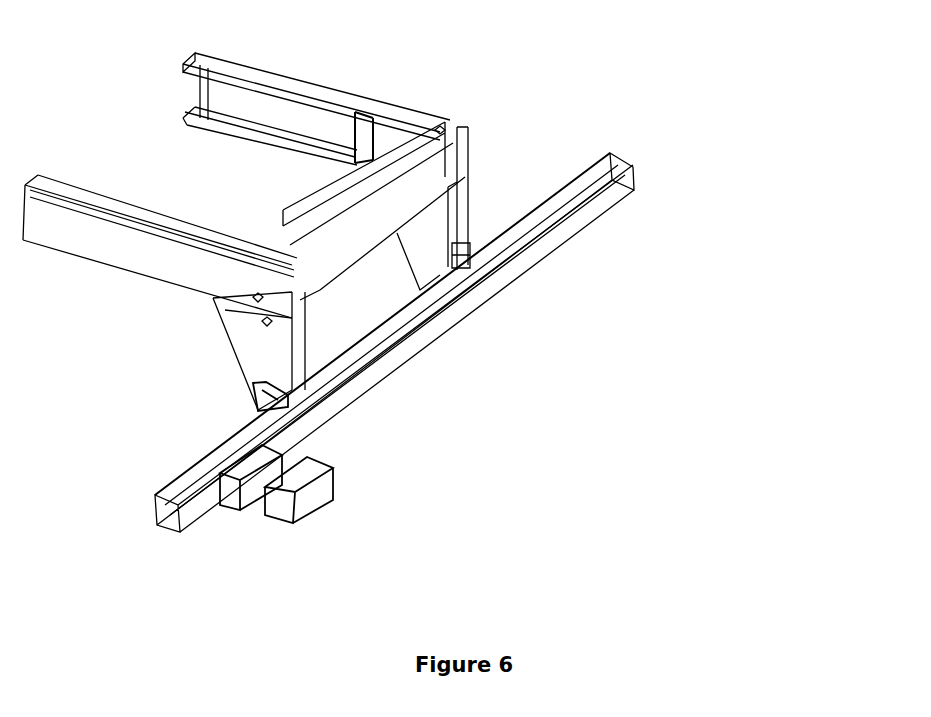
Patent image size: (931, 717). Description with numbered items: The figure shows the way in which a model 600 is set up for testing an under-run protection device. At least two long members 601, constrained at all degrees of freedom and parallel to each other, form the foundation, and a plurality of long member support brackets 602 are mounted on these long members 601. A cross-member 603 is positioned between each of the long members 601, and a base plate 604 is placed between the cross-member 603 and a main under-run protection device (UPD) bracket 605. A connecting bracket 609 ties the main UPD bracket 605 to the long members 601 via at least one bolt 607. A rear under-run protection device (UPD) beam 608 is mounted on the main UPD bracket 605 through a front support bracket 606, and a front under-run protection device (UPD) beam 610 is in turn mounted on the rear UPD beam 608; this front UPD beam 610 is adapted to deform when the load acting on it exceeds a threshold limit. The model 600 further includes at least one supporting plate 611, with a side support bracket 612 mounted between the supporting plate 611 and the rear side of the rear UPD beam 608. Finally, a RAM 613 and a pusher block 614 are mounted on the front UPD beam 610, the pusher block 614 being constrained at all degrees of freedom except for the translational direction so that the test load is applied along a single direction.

The model 600 is at (248, 168).
The long members 601 is at (333, 92).
The long member support brackets 602 is at (366, 123).
The cross-member 603 is at (392, 160).
The base plate 604 is at (453, 198).
The main under-run protection device (UPD) bracket 605 is at (431, 229).
The front support bracket 606 is at (459, 261).
The bolt 607 is at (278, 306).
The rear under-run protection device (UPD) beam 608 is at (278, 328).
The connecting bracket 609 is at (394, 322).
The front under-run protection device (UPD) beam 610 is at (346, 390).
The supporting plate 611 is at (268, 358).
The side support bracket 612 is at (262, 404).
The RAM 613 is at (264, 459).
The pusher block 614 is at (302, 497).